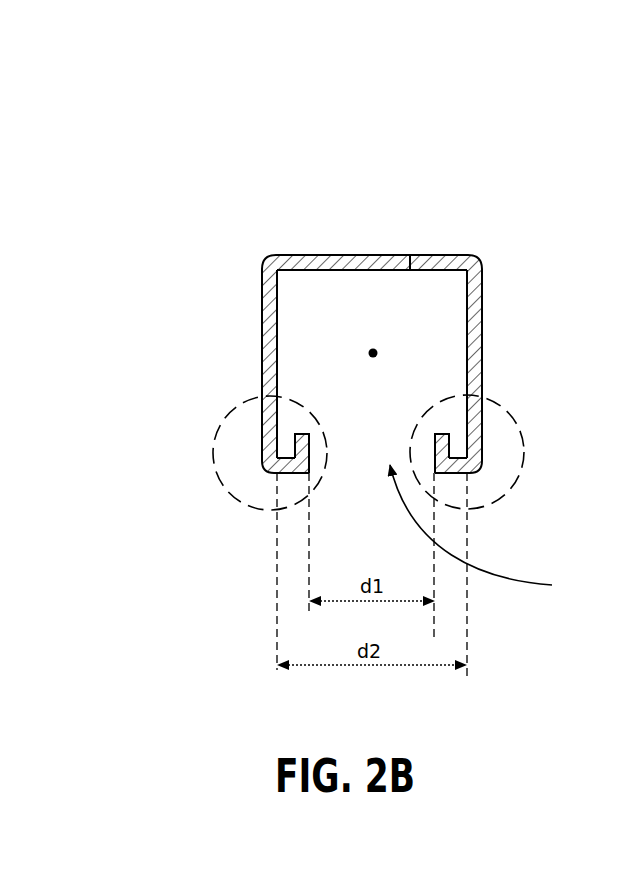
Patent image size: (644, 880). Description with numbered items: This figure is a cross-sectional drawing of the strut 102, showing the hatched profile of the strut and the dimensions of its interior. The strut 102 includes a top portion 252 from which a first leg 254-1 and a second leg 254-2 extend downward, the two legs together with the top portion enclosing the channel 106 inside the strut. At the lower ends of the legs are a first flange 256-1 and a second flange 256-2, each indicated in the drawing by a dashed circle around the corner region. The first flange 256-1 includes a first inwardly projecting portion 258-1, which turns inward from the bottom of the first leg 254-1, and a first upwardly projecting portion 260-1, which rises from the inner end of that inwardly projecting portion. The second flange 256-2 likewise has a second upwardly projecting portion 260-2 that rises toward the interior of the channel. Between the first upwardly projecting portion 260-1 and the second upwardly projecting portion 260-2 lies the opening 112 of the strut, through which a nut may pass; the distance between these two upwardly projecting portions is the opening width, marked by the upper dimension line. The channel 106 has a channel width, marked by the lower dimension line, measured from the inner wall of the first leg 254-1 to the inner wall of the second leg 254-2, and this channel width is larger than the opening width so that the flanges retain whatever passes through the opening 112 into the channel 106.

The strut 102 is at (242, 238).
The channel 106 is at (373, 353).
The opening 112 is at (499, 531).
The top portion 252 is at (363, 255).
The first leg 254-1 is at (262, 382).
The second leg 254-2 is at (482, 327).
The first flange 256-1 is at (237, 491).
The second flange 256-2 is at (523, 452).
The first inwardly projecting portion 258-1 is at (289, 476).
The first upwardly projecting portion 260-1 is at (309, 447).
The second upwardly projecting portion 260-2 is at (435, 447).